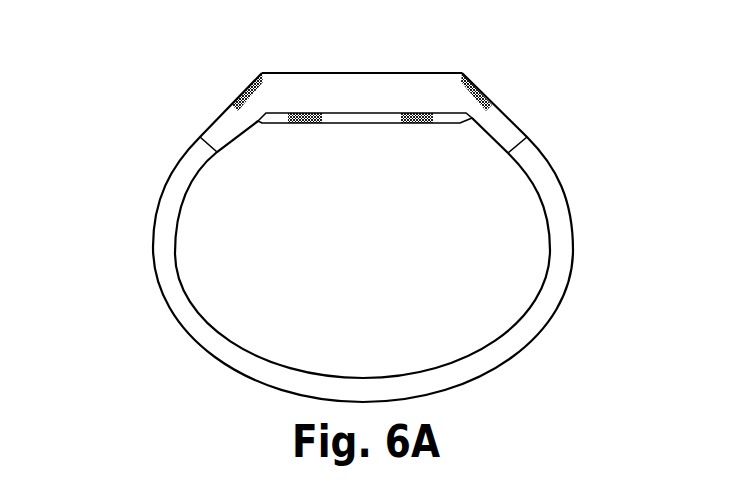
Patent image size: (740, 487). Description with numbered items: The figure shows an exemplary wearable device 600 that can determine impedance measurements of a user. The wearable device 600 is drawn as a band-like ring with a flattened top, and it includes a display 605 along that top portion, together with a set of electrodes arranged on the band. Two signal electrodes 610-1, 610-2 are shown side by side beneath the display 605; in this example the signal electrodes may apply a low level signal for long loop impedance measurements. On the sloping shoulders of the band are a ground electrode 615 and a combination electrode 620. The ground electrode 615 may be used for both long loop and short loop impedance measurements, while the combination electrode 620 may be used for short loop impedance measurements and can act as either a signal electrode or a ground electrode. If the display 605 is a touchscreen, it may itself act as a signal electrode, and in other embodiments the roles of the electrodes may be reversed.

The wearable device 600 is at (137, 79).
The display 605 is at (388, 72).
The signal electrode 610-1 is at (305, 123).
The signal electrode 610-2 is at (417, 123).
The ground electrode 615 is at (485, 87).
The combination electrode 620 is at (244, 90).